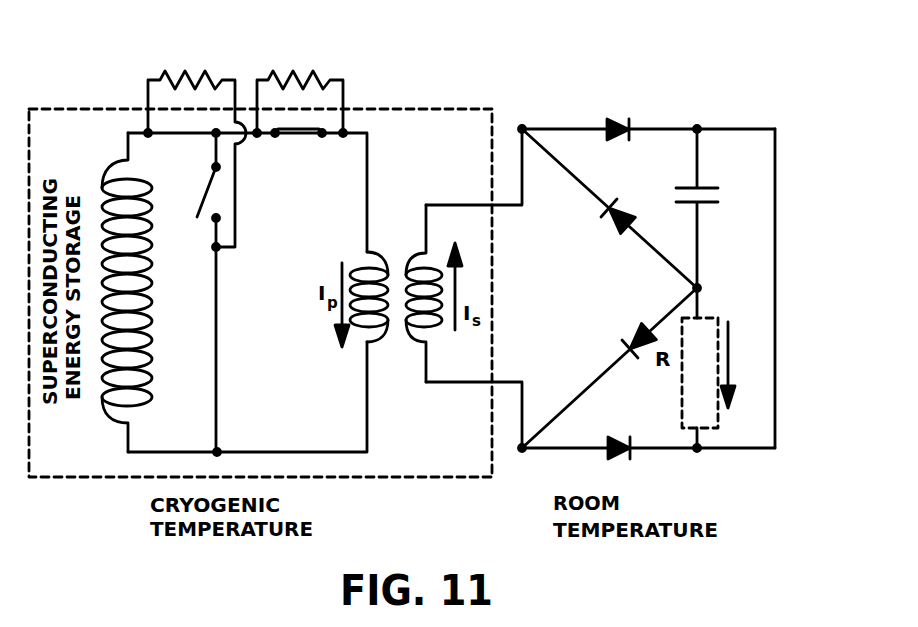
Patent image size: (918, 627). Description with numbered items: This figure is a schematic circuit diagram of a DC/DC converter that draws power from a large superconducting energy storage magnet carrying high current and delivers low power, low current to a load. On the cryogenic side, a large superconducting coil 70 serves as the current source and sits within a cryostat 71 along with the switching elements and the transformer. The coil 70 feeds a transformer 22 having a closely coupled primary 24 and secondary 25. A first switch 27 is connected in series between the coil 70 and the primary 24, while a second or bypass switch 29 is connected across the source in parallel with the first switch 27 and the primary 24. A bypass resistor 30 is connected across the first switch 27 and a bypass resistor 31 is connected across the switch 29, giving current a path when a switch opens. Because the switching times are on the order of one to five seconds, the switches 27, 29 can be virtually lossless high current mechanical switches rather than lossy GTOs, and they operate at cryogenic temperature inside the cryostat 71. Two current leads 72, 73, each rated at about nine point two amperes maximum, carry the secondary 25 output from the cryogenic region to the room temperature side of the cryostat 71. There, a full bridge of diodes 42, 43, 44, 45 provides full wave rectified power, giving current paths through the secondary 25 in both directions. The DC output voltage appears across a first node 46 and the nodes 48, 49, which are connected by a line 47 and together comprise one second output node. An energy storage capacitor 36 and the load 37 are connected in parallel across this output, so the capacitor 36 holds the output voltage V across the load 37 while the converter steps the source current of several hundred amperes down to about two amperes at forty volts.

The transformer 22 is at (397, 276).
The primary 24 is at (367, 330).
The secondary 25 is at (432, 330).
The first switch 27 is at (293, 136).
The second or bypass switch 29 is at (198, 200).
The bypass resistor 30 is at (320, 72).
The bypass resistor 31 is at (212, 72).
The energy storage capacitor 36 is at (716, 186).
The load 37 is at (710, 318).
The diode 42 is at (612, 122).
The diode 43 is at (625, 214).
The diode 44 is at (632, 336).
The diode 45 is at (617, 455).
The first node 46 is at (705, 285).
The line 47 is at (777, 312).
The node 48 is at (700, 128).
The node 49 is at (700, 450).
The superconducting coil 70 is at (110, 160).
The cryostat 71 is at (102, 108).
The current lead 72 is at (507, 207).
The current lead 73 is at (505, 379).